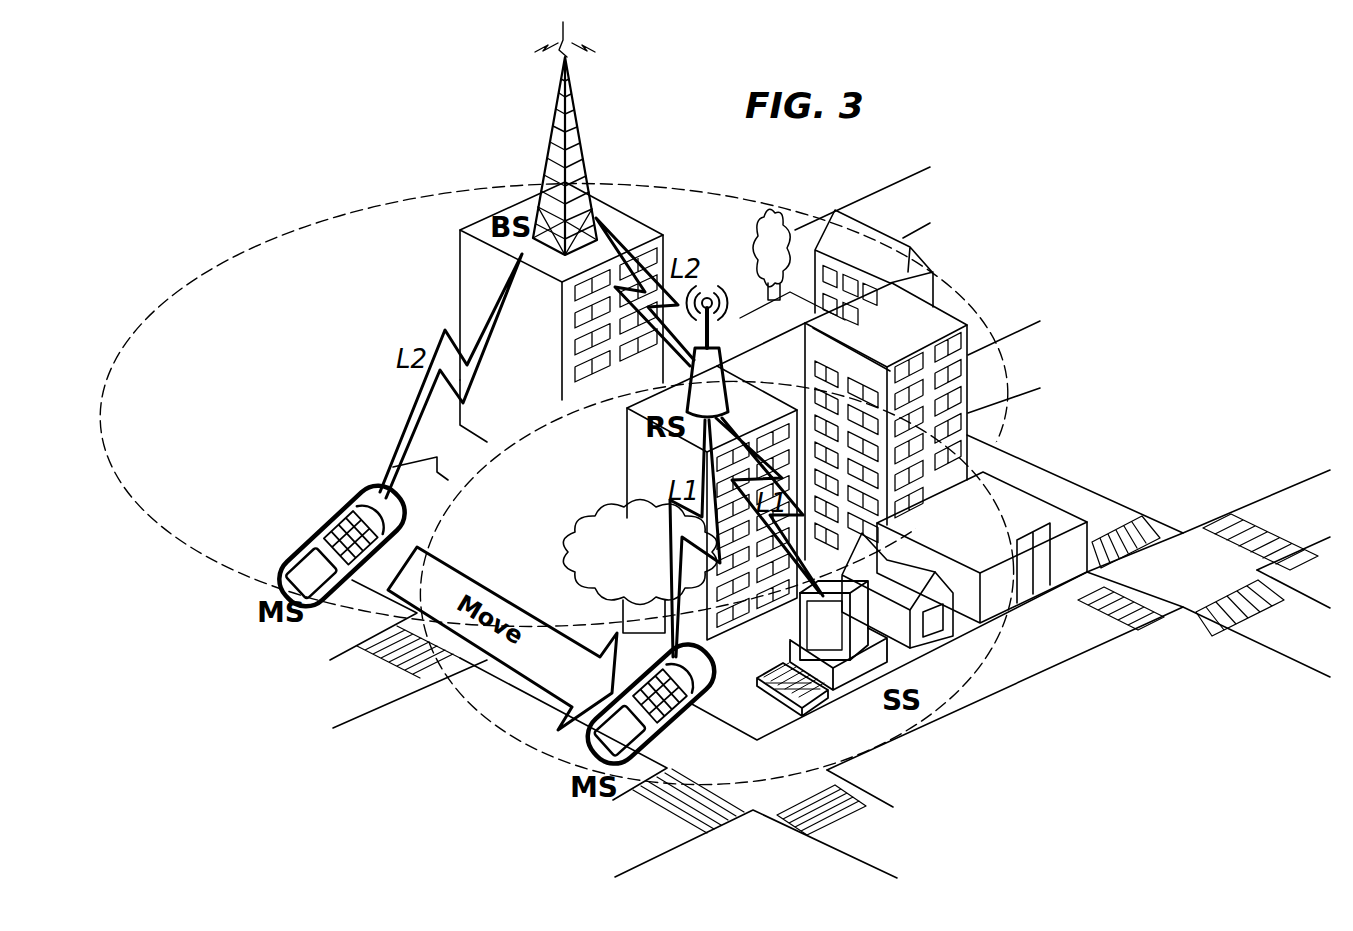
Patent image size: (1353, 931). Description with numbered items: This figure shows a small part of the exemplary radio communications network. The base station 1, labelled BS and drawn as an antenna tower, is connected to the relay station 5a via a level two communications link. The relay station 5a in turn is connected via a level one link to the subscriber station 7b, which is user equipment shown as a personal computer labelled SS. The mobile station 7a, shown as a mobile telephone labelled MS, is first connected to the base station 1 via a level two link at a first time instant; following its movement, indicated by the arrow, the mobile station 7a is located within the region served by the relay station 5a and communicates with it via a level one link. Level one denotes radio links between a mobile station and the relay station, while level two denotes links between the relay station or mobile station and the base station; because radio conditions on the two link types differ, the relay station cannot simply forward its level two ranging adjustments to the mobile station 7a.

The base station 1 is at (548, 123).
The relay station 5a is at (714, 371).
The mobile station 7a is at (310, 548).
The subscriber station 7b is at (862, 667).